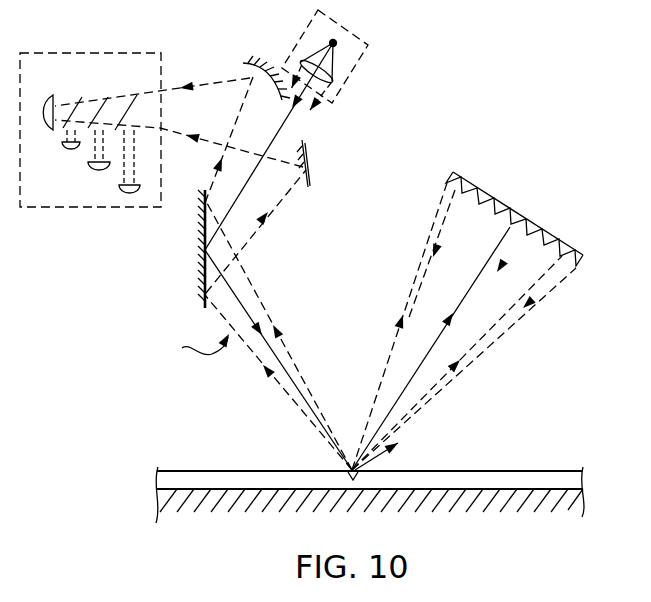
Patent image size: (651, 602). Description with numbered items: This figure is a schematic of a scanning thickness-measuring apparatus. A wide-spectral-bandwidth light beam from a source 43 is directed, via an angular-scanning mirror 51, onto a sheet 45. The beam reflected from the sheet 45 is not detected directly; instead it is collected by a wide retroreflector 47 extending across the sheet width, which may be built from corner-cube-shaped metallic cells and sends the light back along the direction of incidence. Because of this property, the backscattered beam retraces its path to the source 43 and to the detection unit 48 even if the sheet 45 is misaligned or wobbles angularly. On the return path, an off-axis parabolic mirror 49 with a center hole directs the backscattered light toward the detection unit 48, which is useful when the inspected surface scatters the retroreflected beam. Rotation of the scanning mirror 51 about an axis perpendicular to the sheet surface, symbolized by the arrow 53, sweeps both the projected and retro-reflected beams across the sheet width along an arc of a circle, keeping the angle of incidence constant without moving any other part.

The source 43 is at (338, 42).
The sheet 45 is at (470, 471).
The retroreflector 47 is at (533, 220).
The detection unit 48 is at (75, 52).
The off-axis parabolic mirror 49 is at (310, 165).
The angular-scanning mirror 51 is at (203, 233).
The arrow 53 is at (184, 349).